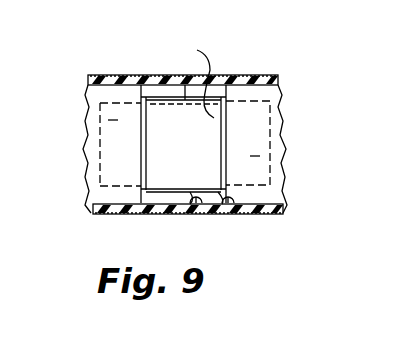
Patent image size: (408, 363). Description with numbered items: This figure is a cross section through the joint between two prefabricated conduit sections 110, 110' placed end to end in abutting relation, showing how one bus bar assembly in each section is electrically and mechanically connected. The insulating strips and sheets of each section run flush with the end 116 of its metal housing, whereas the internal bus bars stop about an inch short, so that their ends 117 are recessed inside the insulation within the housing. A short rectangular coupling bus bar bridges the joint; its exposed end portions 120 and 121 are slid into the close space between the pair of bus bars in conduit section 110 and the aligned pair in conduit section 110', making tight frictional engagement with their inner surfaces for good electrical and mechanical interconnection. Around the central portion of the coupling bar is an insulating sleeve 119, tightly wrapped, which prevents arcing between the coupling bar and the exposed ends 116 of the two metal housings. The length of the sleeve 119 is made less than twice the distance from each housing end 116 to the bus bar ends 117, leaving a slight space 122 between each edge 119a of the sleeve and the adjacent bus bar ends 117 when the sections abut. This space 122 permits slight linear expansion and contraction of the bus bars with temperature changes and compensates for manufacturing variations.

The conduit section 110 is at (192, 128).
The conduit section 110' is at (100, 127).
The end of conduit section 116 is at (218, 193).
The ends of bus bars 117 is at (150, 124).
The insulating sleeve 119 is at (178, 165).
The edge of insulating sleeve 119a is at (221, 156).
The exposed end portion of connecting bus bar 120 is at (277, 150).
The exposed end portion of connecting bus bar 121 is at (100, 121).
The space 122 is at (153, 96).